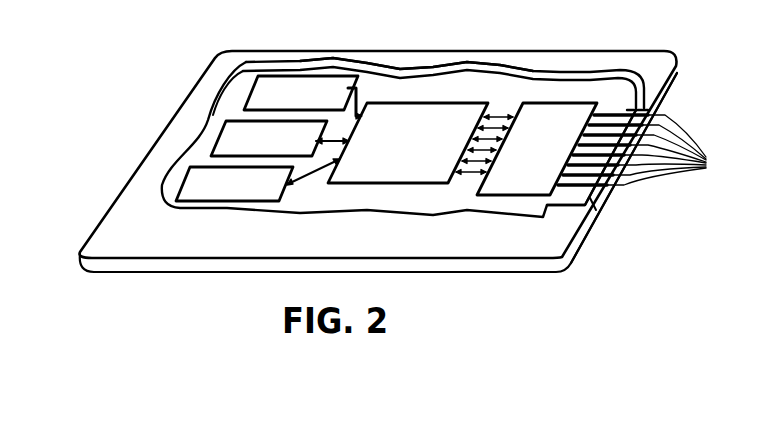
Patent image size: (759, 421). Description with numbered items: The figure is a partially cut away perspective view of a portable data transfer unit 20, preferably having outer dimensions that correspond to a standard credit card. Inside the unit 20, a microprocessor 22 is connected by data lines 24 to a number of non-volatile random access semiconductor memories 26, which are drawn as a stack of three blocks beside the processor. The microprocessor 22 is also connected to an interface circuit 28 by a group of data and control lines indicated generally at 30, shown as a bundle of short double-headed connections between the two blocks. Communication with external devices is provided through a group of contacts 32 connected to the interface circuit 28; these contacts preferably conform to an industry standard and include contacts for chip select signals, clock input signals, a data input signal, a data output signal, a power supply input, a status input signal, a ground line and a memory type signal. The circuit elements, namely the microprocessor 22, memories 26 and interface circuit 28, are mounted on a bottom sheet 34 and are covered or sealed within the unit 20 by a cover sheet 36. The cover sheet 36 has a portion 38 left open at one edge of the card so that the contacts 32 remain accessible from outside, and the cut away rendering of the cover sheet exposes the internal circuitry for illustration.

The portable data transfer unit 20 is at (675, 72).
The microprocessor 22 is at (407, 107).
The data lines 24 is at (360, 102).
The non-volatile random access semiconductor memories 26 is at (253, 91).
The interface circuit 28 is at (540, 110).
The data and control lines 30 is at (507, 113).
The contacts 32 is at (646, 150).
The bottom sheet 34 is at (587, 90).
The cover sheet 36 is at (643, 87).
The open portion 38 is at (593, 203).